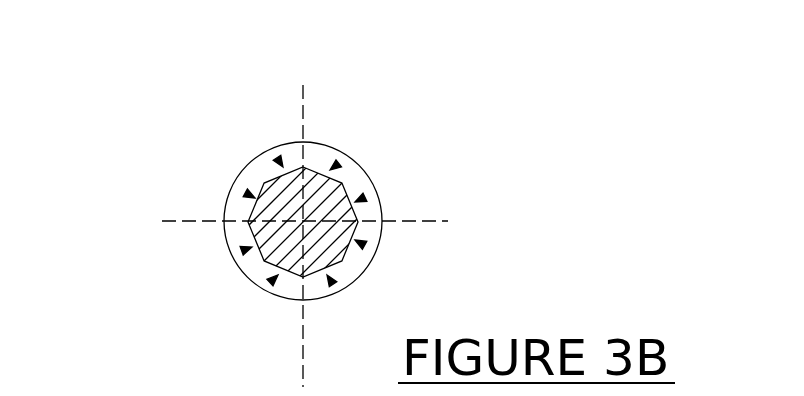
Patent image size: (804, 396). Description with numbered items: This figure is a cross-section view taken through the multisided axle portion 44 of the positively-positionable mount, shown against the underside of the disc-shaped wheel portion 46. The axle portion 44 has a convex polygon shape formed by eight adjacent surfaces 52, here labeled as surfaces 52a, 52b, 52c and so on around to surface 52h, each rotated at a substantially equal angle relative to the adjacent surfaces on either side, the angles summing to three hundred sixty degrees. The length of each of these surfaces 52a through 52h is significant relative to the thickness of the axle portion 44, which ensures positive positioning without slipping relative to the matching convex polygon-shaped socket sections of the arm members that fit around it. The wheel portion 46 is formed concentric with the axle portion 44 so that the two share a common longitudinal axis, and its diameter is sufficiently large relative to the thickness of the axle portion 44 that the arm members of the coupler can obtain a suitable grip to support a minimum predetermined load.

The axle portion 44 is at (347, 178).
The wheel portion 46 is at (323, 143).
The adjacent surfaces 52 is at (283, 167).
The surface 52a is at (252, 247).
The surface 52b is at (278, 275).
The surface 52c is at (327, 275).
The surface 52h is at (255, 198).